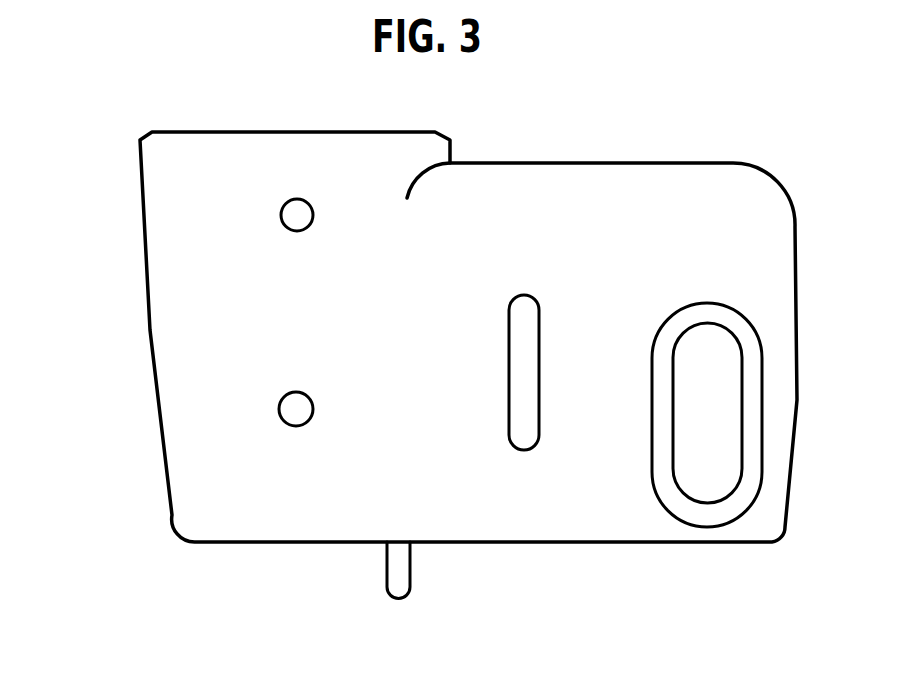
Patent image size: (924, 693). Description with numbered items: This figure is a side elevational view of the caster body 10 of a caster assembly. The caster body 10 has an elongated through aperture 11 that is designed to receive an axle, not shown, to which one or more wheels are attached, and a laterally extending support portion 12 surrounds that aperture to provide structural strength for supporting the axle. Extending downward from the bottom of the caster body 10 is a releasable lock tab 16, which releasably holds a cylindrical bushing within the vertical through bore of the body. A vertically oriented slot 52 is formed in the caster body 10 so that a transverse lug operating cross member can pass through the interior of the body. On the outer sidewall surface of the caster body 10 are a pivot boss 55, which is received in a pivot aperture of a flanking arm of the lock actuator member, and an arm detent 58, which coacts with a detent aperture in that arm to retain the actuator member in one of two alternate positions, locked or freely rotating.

The caster body 10 is at (133, 318).
The elongated through aperture 11 is at (725, 373).
The laterally extending support portion 12 is at (738, 325).
The releasable lock tab 16 is at (410, 586).
The vertically oriented slot 52 is at (527, 322).
The pivot boss 55 is at (293, 409).
The arm detent 58 is at (290, 207).